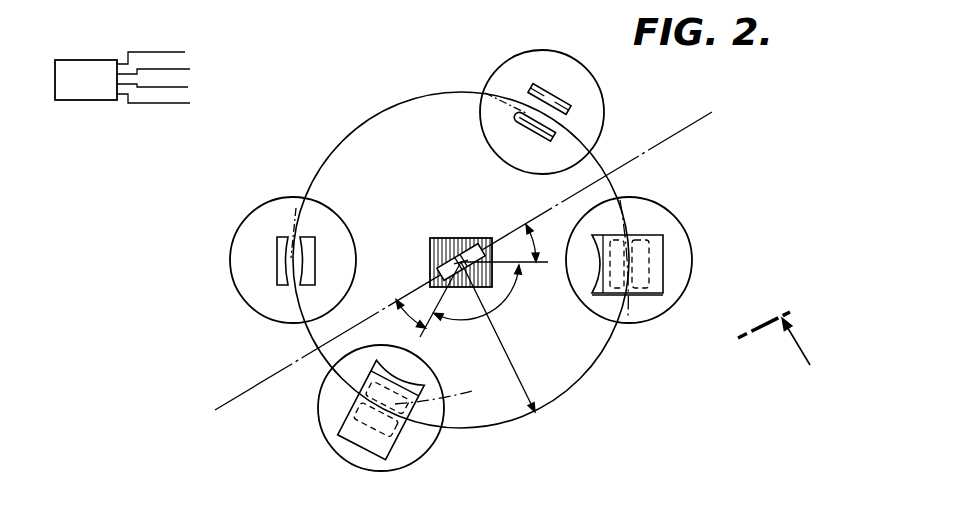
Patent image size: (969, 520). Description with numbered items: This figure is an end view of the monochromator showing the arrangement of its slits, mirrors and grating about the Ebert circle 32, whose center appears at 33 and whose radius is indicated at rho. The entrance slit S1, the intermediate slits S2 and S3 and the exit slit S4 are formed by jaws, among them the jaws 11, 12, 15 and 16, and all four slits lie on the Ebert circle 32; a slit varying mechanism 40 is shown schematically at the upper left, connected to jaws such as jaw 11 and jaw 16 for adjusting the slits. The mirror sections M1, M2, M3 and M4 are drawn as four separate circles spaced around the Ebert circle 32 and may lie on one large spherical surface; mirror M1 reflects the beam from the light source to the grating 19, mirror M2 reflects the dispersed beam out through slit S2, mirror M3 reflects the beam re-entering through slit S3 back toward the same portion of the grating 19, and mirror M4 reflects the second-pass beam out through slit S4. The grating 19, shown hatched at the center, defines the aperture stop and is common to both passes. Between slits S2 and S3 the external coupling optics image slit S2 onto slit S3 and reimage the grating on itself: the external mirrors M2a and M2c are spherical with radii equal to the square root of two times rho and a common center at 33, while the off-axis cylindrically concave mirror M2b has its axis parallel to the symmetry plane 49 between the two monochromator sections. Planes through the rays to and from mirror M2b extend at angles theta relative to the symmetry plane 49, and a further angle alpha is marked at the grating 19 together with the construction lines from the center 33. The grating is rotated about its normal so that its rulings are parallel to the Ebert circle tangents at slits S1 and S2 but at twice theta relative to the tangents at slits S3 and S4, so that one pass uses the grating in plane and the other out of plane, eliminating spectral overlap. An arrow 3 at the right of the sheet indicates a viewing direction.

The slit varying mechanism 40 is at (95, 92).
The jaw 11 is at (278, 272).
The jaw 12 is at (307, 246).
The jaw 15 is at (518, 122).
The jaw 16 is at (560, 104).
The grating 19 is at (430, 270).
The center of Ebert circle 33 is at (455, 256).
The Ebert circle 32 is at (530, 418).
The symmetry plane 49 is at (271, 375).
The section line / view direction 3 is at (783, 338).
The mirror section M1 is at (247, 228).
The mirror section M2 is at (690, 228).
The mirror section M3 is at (339, 454).
The mirror section M4 is at (553, 50).
The external mirror M2a is at (664, 274).
The off-axis cylindrically concave mirror M2b is at (466, 238).
The external mirror M2c is at (384, 455).
The entrance slit S1 is at (297, 206).
The intermediate slit S2 is at (628, 318).
The intermediate slit S3 is at (445, 397).
The exit slit S4 is at (484, 92).
The angle theta is at (467, 277).
The angle alpha is at (478, 293).
The radius of Ebert circle rho is at (498, 337).